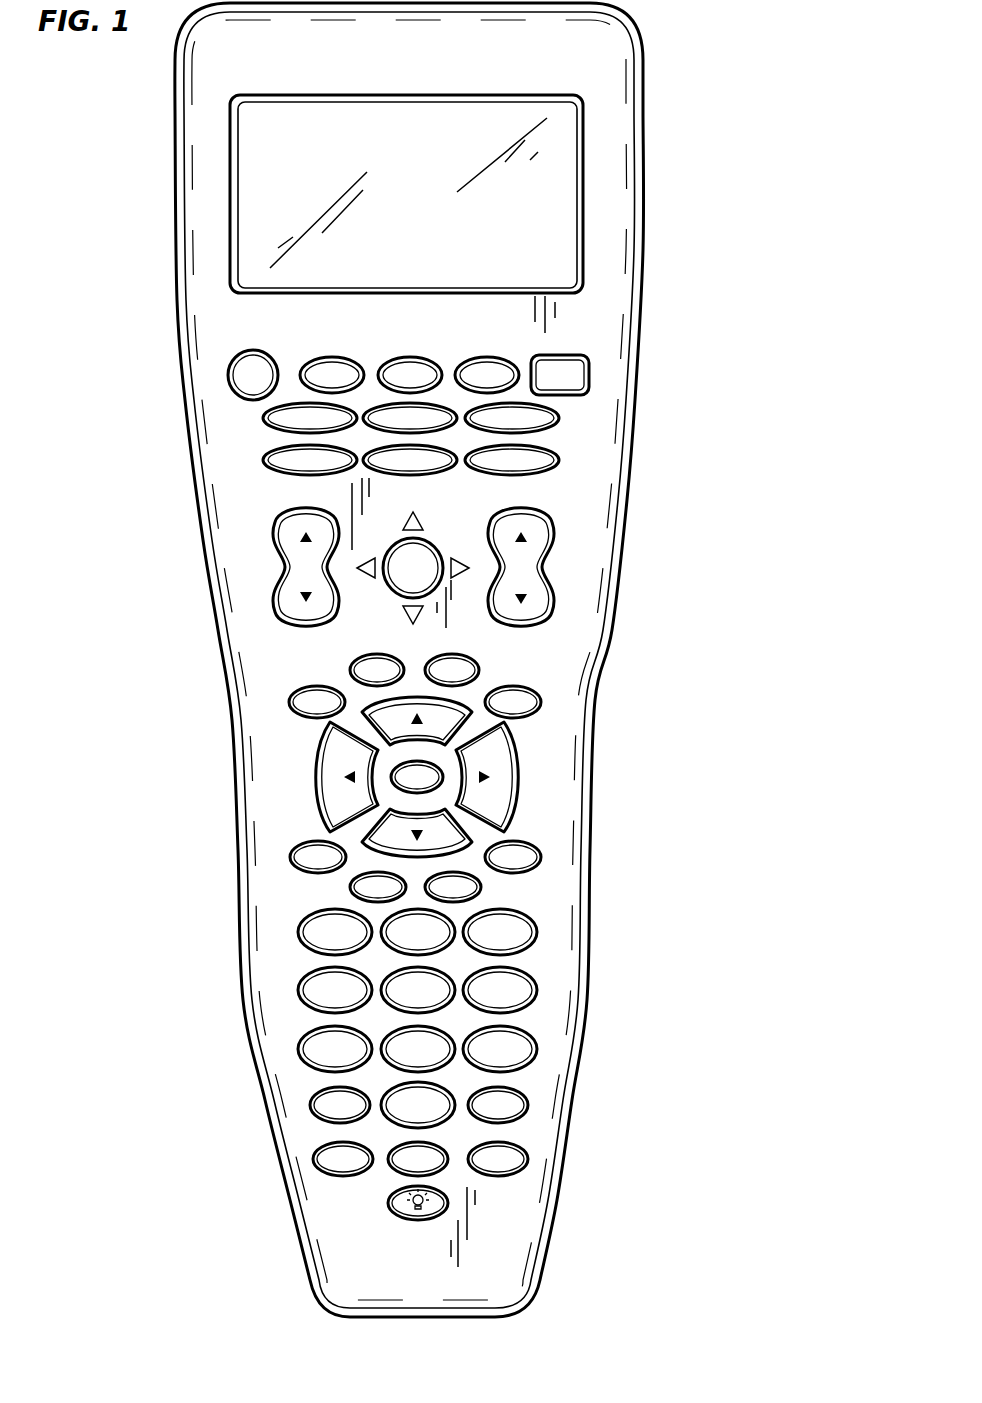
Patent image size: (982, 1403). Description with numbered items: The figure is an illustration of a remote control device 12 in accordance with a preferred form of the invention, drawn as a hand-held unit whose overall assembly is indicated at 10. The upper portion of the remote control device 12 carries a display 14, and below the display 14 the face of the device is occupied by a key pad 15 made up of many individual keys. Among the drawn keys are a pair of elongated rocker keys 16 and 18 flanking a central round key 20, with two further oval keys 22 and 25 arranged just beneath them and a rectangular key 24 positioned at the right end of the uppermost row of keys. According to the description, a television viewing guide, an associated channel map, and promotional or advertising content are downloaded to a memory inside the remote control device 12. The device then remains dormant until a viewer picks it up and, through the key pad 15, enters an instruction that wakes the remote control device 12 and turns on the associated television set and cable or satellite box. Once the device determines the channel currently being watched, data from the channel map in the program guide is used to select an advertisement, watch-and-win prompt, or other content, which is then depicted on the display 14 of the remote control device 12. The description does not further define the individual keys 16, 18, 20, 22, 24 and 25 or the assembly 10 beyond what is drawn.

The remote control 10 is at (701, 697).
The remote control device 12 is at (428, 54).
The display 14 is at (540, 232).
The key pad 15 is at (279, 773).
The volume rocker key 16 is at (293, 565).
The channel rocker key 18 is at (540, 562).
The EZ NAV key 20 is at (403, 597).
The EZ MENU key 22 is at (351, 668).
The EZ GUIDE key 24 is at (590, 358).
The EZ INFO key 25 is at (478, 663).